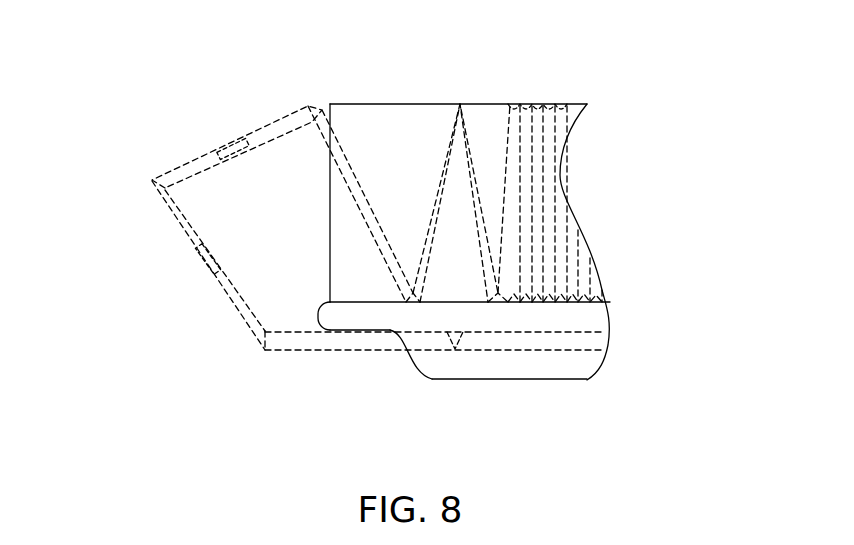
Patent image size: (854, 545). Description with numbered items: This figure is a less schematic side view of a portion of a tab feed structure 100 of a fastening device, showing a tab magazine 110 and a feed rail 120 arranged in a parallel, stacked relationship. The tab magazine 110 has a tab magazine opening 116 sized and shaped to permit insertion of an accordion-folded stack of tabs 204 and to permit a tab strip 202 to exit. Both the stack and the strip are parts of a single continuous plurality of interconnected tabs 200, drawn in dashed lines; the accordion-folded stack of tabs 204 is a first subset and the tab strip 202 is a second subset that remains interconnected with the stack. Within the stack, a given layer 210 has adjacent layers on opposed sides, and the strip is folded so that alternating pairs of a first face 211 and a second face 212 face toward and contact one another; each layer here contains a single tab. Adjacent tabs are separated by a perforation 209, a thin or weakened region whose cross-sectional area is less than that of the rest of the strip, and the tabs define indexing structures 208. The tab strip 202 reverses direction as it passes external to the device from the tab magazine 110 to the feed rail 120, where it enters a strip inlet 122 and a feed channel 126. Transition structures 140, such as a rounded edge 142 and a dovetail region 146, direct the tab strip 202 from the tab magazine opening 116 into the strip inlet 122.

The tab feed structure 100 is at (705, 92).
The tab magazine 110 is at (398, 103).
The tab magazine opening 116 is at (307, 210).
The feed rail 120 is at (550, 383).
The strip inlet 122 is at (388, 358).
The feed channel 126 is at (513, 340).
The transition structure 140 is at (307, 313).
The rounded edge 142 is at (316, 310).
The dovetail region 146 is at (428, 380).
The interconnected tabs 200 is at (273, 118).
The tab strip 202 is at (203, 292).
The accordion-folded stack of tabs 204 is at (507, 135).
The indexing structure 208 is at (238, 138).
The perforation 209 is at (313, 118).
The layer 210 is at (520, 104).
The first face 211 is at (340, 152).
The second face 212 is at (363, 223).